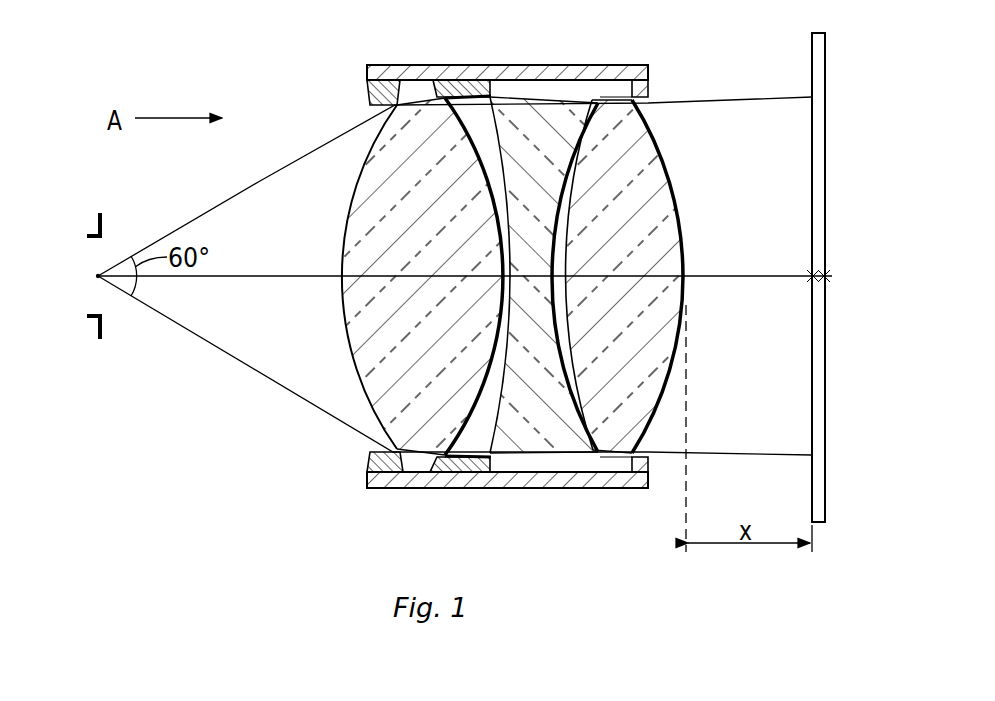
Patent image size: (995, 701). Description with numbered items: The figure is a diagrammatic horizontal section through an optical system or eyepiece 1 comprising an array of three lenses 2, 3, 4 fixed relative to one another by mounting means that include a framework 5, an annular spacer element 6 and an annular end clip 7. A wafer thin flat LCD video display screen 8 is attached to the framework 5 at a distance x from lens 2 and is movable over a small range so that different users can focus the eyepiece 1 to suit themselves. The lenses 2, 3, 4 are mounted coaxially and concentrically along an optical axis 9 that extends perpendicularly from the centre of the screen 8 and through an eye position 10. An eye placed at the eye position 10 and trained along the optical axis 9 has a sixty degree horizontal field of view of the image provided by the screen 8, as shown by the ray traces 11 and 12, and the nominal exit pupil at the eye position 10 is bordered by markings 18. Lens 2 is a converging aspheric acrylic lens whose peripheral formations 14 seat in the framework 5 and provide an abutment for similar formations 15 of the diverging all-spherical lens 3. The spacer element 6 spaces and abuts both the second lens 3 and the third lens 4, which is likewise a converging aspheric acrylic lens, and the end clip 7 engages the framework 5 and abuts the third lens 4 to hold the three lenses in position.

The optical system or eyepiece 1 is at (279, 436).
The first lens 2 is at (625, 180).
The second lens 3 is at (535, 145).
The third lens 4 is at (385, 218).
The framework 5 is at (392, 80).
The annular spacer element 6 is at (457, 87).
The annular end clip 7 is at (375, 102).
The LCD video display screen 8 is at (820, 63).
The optical axis 9 is at (737, 273).
The eye position 10 is at (95, 277).
The ray trace 11 is at (215, 198).
The ray trace 12 is at (233, 358).
The peripheral formations 14 is at (608, 90).
The peripheral formations 15 is at (512, 90).
The markings 18 is at (87, 221).